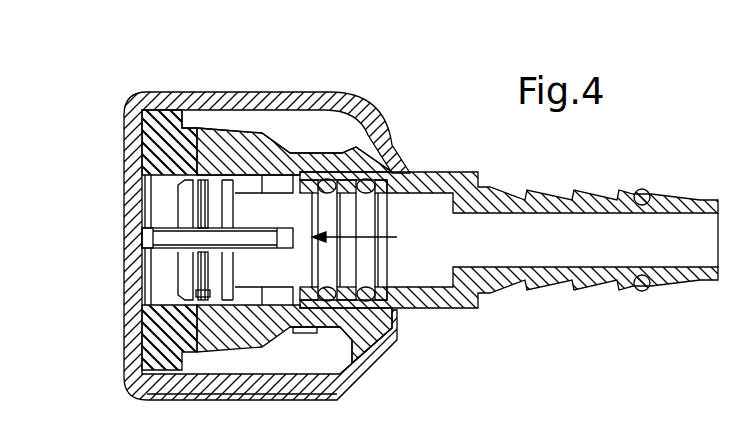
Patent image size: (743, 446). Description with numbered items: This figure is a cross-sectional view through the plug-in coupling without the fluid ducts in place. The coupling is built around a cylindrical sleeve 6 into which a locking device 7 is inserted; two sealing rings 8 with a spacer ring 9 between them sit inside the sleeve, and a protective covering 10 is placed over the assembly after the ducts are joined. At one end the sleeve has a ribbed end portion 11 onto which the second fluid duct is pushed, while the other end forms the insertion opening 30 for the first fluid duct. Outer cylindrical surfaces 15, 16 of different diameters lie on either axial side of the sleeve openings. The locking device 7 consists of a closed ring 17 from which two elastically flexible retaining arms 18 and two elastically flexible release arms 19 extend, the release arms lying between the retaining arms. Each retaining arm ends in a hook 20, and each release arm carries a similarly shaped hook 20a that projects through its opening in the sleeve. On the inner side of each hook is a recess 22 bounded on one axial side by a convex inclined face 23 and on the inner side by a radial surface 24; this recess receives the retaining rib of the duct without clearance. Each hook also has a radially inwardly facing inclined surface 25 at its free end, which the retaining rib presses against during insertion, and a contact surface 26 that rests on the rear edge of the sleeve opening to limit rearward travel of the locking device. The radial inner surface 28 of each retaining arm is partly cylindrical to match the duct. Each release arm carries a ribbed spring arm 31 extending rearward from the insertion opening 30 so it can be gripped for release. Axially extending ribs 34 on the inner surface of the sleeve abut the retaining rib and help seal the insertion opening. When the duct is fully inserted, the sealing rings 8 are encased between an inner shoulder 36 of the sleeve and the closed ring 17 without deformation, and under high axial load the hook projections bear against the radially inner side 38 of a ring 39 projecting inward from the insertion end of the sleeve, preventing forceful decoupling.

The cylindrical sleeve 6 is at (447, 172).
The locking device 7 is at (364, 231).
The sealing rings 8 is at (330, 180).
The spacer ring 9 is at (349, 180).
The protective covering 10 is at (112, 141).
The ribbed end portion 11 is at (558, 198).
The outer cylindrical surface 15 is at (368, 340).
The outer cylindrical surface 16 is at (147, 92).
The closed ring 17 is at (307, 137).
The retaining arms 18 is at (262, 145).
The release arms 19 is at (275, 292).
The hook 20 is at (210, 135).
The hook 20a is at (203, 288).
The recess 22 is at (165, 252).
The inclined face 23 is at (194, 134).
The radial surface 24 is at (200, 128).
The inclined surface 25 is at (187, 202).
The contact surface 26 is at (235, 133).
The radial inner surface 28 is at (267, 212).
The insertion opening 30 is at (160, 197).
The spring arm 31 is at (312, 333).
The axially extending ribs 34 is at (157, 182).
The inner shoulder 36 is at (399, 170).
The radially inner side 38 is at (186, 122).
The ring 39 is at (157, 118).